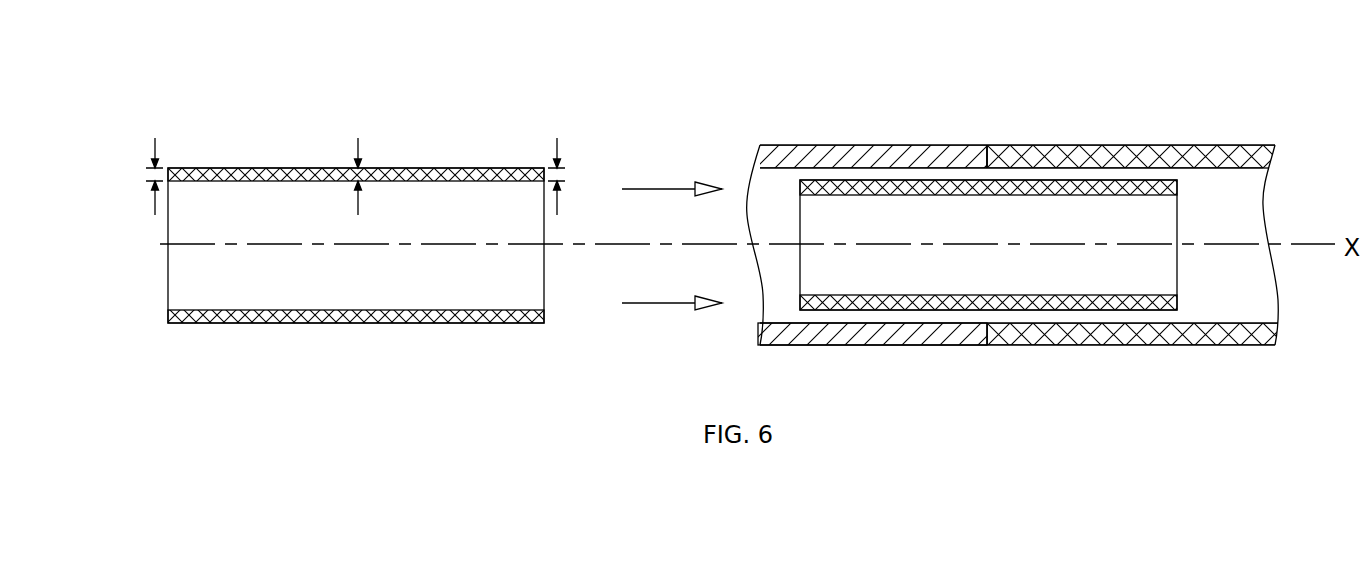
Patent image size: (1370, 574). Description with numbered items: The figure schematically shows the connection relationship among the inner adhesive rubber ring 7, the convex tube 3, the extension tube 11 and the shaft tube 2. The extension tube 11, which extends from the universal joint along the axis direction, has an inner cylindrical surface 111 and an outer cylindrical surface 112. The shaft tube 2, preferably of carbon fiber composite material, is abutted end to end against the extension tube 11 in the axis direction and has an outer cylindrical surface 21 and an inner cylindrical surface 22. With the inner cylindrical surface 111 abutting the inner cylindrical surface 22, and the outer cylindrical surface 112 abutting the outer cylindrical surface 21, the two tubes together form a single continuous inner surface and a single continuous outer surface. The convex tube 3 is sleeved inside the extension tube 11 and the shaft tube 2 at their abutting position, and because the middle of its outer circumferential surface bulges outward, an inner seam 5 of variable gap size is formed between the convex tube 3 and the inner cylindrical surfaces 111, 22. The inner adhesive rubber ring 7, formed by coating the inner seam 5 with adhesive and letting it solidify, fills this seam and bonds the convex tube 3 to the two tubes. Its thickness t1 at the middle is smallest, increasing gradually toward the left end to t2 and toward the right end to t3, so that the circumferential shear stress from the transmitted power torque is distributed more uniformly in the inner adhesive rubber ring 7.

The inner adhesive rubber ring 7 is at (254, 168).
The thickness of the middle part of the inner adhesive rubber ring t1 is at (360, 161).
The thickness at the left part of the inner adhesive rubber ring t2 is at (157, 161).
The thickness at the right part of the inner adhesive rubber ring t3 is at (559, 161).
The extension tube 11 is at (906, 153).
The outer cylindrical surface of the extension tube 112 is at (801, 142).
The inner cylindrical surface of the extension tube 111 is at (772, 172).
The shaft tube 2 is at (1140, 146).
The outer cylindrical surface of the shaft tube 21 is at (1229, 141).
The inner cylindrical surface of the shaft tube 22 is at (1256, 172).
The convex tube 3 is at (1178, 278).
The inner seam 5 is at (1163, 173).